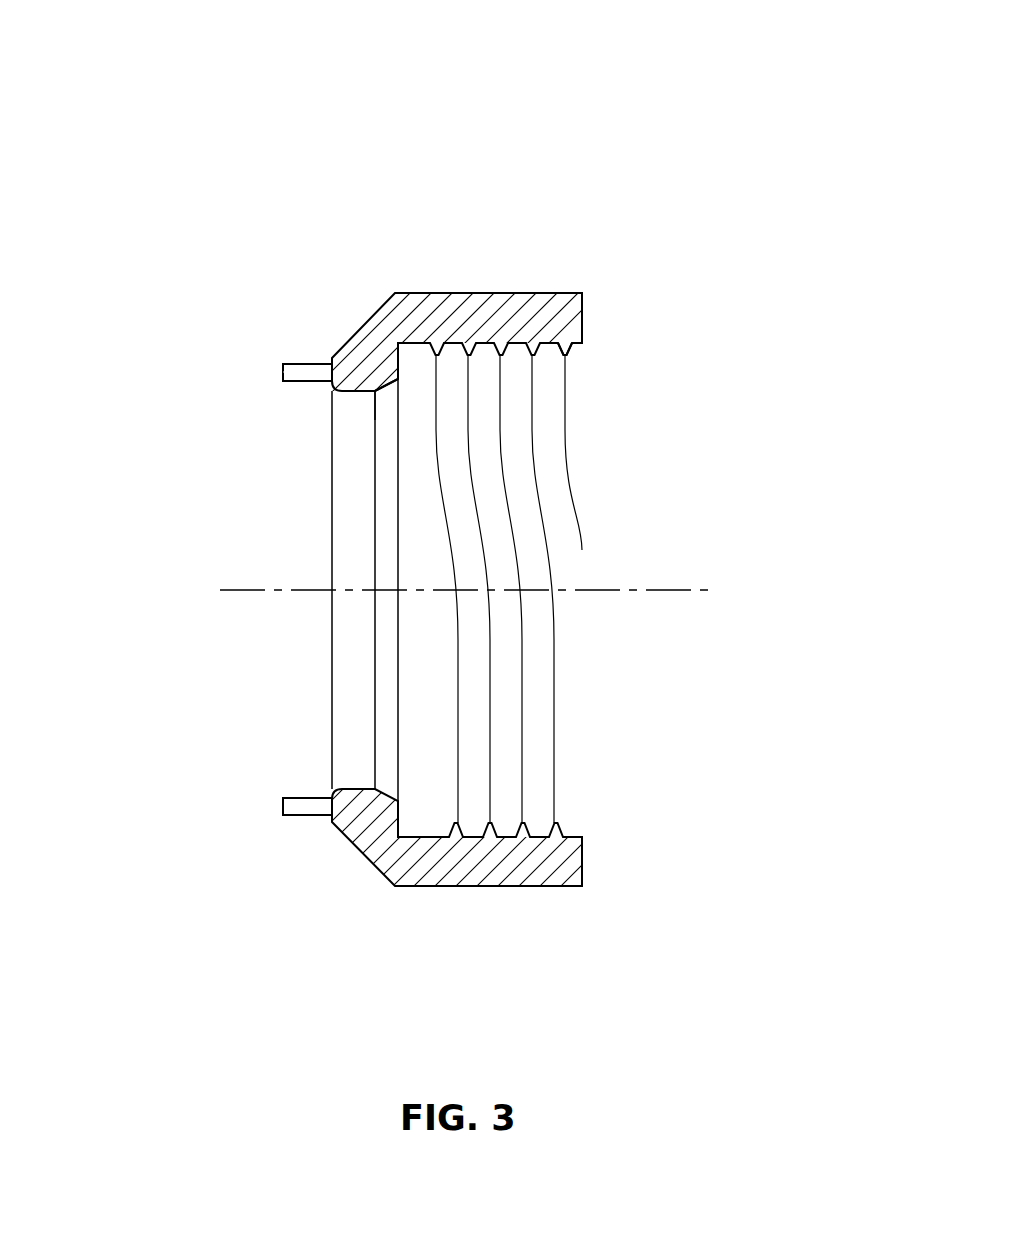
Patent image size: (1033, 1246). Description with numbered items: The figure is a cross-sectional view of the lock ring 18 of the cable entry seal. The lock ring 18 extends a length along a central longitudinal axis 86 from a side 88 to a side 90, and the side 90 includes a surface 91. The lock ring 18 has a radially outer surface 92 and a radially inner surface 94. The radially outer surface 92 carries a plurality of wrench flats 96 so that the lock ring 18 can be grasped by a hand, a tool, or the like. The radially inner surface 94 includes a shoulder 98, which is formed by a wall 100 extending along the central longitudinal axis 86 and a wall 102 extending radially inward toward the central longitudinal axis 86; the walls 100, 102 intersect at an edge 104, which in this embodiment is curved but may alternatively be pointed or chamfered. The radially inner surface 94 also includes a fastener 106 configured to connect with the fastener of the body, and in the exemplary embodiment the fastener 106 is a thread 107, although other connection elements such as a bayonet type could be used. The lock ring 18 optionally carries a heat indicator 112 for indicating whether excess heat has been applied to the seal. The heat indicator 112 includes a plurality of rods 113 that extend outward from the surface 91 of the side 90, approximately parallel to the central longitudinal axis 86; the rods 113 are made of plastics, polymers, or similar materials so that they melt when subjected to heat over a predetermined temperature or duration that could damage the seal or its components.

The lock ring 18 is at (575, 113).
The central longitudinal axis 86 is at (658, 592).
The side 88 is at (668, 287).
The side 90 is at (198, 803).
The surface 91 is at (332, 358).
The radially outer surface 92 is at (465, 887).
The radially inner surface 94 is at (447, 835).
The wrench flats 96 is at (568, 888).
The shoulder 98 is at (383, 405).
The wall 100 is at (357, 392).
The wall 102 is at (403, 354).
The edge 104 is at (392, 387).
The fastener 106 is at (577, 822).
The thread 107 is at (568, 348).
The heat indicator 112 is at (270, 353).
The rods 113 is at (288, 360).